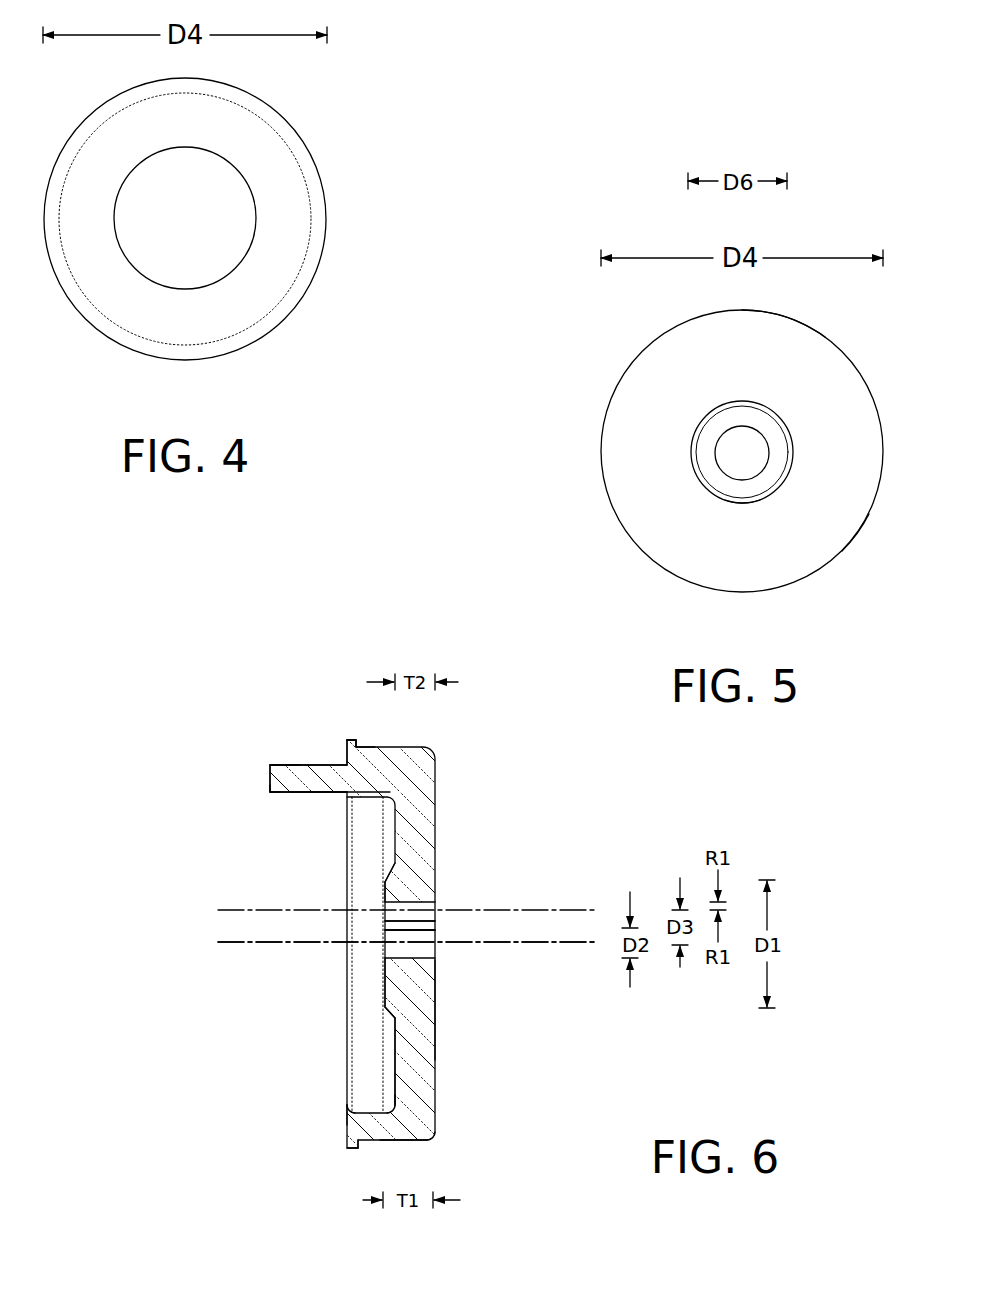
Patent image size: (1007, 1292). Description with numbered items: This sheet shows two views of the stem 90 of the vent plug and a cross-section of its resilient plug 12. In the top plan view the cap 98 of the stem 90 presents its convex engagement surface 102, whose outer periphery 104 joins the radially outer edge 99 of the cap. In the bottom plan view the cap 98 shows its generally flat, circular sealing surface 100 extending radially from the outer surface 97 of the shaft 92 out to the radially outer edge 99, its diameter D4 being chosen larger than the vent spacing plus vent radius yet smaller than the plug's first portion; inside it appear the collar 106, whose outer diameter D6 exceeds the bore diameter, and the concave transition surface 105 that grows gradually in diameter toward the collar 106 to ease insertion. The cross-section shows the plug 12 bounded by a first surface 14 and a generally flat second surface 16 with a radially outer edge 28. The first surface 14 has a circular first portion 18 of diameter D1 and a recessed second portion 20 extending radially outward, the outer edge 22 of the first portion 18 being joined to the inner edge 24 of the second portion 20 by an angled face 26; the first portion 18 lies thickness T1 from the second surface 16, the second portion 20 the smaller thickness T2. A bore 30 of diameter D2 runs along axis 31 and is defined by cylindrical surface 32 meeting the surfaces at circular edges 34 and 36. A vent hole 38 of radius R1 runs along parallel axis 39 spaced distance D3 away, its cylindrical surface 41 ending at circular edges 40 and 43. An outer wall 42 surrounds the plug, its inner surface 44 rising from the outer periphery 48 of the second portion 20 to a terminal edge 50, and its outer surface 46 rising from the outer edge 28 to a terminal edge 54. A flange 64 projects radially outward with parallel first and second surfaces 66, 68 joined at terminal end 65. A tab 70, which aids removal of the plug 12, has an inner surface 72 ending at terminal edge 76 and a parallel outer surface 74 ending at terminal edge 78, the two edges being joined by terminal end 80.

In FIG. 6, the plug 12 is at (481, 746).
In FIG. 6, the first surface 14 is at (393, 1055).
In FIG. 6, the second surface 16 is at (437, 1010).
In FIG. 6, the first portion 18 is at (385, 890).
In FIG. 6, the second recessed portion 20 is at (395, 1077).
In FIG. 6, the outer edge 22 is at (383, 1007).
In FIG. 6, the inner edge 24 is at (392, 866).
In FIG. 6, the angled face 26 is at (393, 1020).
In FIG. 6, the radially outer edge 28 is at (437, 1135).
In FIG. 6, the bore 30 is at (437, 952).
In FIG. 6, the axis 31 is at (238, 942).
In FIG. 6, the cylindrical surface 32 is at (437, 933).
In FIG. 6, the circular edge 34 is at (355, 950).
In FIG. 6, the circular edge 36 is at (437, 929).
In FIG. 6, the vent hole 38 is at (410, 899).
In FIG. 6, the axis 39 is at (232, 910).
In FIG. 6, the circular edge 40 is at (393, 899).
In FIG. 6, the cylindrical surface 41 is at (436, 907).
In FIG. 6, the outer wall 42 is at (371, 741).
In FIG. 6, the circular edge 43 is at (437, 900).
In FIG. 6, the inner surface 44 is at (350, 1102).
In FIG. 6, the outer surface 46 is at (420, 1142).
In FIG. 6, the outer periphery 48 is at (397, 1102).
In FIG. 6, the terminal edge 50 is at (348, 1112).
In FIG. 6, the terminal edge 54 is at (348, 735).
In FIG. 6, the flange 64 is at (357, 1156).
In FIG. 6, the terminal end 65 is at (353, 1150).
In FIG. 6, the first surface 66 is at (351, 737).
In FIG. 6, the second surface 68 is at (293, 762).
In FIG. 6, the tab 70 is at (267, 778).
In FIG. 6, the inner surface 72 is at (297, 797).
In FIG. 6, the outer surface 74 is at (288, 766).
In FIG. 6, the terminal edge 76 is at (276, 796).
In FIG. 6, the terminal edge 78 is at (345, 757).
In FIG. 6, the terminal end 80 is at (271, 792).
In FIG. 4, the stem 90 is at (352, 233).
In FIG. 5, the stem 90 is at (566, 425).
In FIG. 5, the shaft 92 is at (758, 455).
In FIG. 5, the outer surface 97 is at (716, 450).
In FIG. 5, the cap 98 is at (870, 515).
In FIG. 5, the radially outer edge 99 is at (826, 337).
In FIG. 5, the sealing surface 100 is at (655, 387).
In FIG. 4, the convex engagement surface 102 is at (163, 239).
In FIG. 4, the outer periphery 104 is at (293, 310).
In FIG. 5, the concave transition surface 105 is at (705, 466).
In FIG. 5, the collar 106 is at (735, 503).